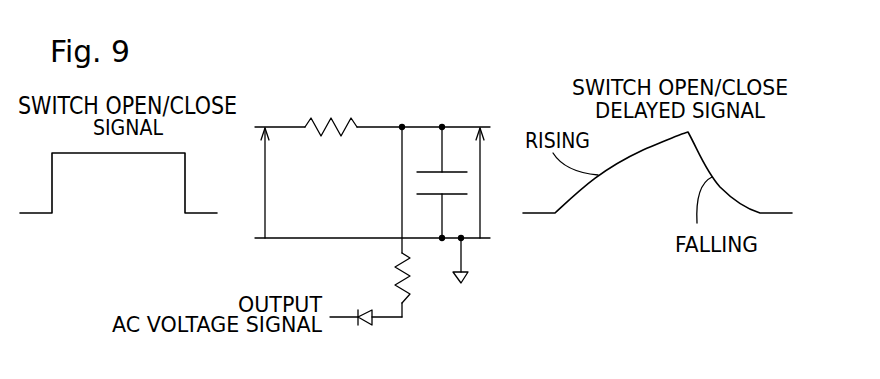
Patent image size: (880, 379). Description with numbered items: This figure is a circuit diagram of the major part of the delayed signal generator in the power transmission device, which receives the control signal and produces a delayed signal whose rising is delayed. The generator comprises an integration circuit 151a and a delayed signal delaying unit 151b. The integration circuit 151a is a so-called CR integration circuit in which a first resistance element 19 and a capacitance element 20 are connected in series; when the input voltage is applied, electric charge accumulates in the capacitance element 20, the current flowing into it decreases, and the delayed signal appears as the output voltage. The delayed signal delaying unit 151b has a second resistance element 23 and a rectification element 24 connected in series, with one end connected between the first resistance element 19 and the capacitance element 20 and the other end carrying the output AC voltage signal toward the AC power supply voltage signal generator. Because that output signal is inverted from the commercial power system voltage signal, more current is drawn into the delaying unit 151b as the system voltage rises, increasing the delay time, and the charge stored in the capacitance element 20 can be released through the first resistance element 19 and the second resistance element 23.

The first resistance element 19 is at (325, 118).
The capacitance element 20 is at (423, 182).
The integration circuit 151a is at (386, 177).
The second resistance element 23 is at (405, 297).
The rectification element 24 is at (372, 324).
The delayed signal delaying unit 151b is at (436, 305).